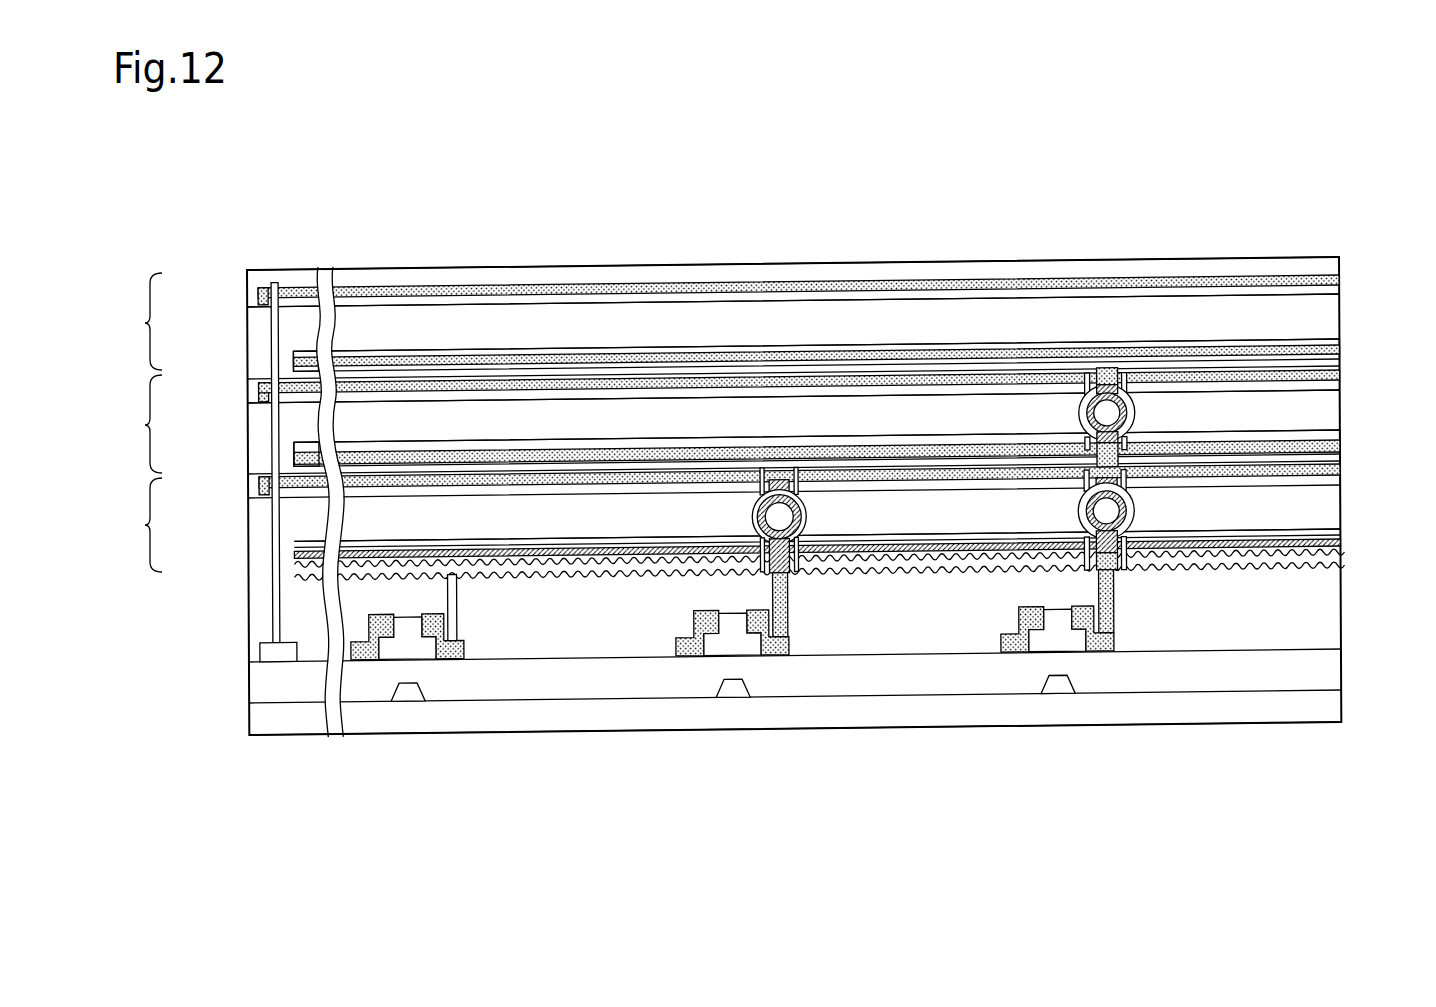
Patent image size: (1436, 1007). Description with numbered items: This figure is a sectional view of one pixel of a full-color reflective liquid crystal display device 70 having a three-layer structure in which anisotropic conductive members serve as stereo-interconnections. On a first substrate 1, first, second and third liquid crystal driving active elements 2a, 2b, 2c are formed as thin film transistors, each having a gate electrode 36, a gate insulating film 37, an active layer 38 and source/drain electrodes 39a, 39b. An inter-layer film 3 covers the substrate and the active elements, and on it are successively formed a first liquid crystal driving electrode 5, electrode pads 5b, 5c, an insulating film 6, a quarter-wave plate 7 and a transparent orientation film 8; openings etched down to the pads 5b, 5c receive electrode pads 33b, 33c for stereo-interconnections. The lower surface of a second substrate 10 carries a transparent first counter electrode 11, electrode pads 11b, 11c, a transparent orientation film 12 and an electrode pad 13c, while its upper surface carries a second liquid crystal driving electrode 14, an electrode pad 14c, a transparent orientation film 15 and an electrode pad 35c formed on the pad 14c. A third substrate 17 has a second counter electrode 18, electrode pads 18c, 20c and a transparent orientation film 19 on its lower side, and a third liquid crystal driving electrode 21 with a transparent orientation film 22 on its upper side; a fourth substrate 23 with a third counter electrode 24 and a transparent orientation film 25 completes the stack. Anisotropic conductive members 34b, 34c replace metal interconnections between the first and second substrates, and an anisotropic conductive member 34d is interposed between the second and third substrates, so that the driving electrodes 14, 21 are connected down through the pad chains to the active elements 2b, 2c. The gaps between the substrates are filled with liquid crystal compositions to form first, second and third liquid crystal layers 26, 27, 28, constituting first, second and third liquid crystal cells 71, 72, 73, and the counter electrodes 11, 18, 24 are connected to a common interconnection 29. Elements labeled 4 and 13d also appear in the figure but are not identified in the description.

The full-color reflective liquid crystal display device 70 is at (979, 213).
The first substrate 1 is at (1322, 708).
The first liquid crystal driving active element 2a is at (456, 678).
The second liquid crystal driving active element 2b is at (694, 669).
The third liquid crystal driving active element 2c is at (1070, 715).
The inter-layer film 3 is at (1340, 601).
The contact hole 4 is at (479, 607).
The first liquid crystal driving electrode 5 is at (585, 575).
The insulating film 6 is at (1282, 569).
The quarter-wave plate 7 is at (1340, 547).
The transparent orientation film 8 is at (1340, 530).
The second substrate 10 is at (247, 478).
The first counter electrode 11 is at (1340, 470).
The transparent orientation film 12 is at (258, 492).
The second liquid crystal driving electrode 14 is at (290, 455).
The transparent orientation film 15 is at (1340, 437).
The third substrate 17 is at (247, 379).
The second counter electrode 18 is at (1340, 377).
The transparent orientation film 19 is at (1340, 392).
The third liquid crystal driving electrode 21 is at (1340, 350).
The transparent orientation film 22 is at (288, 355).
The fourth substrate 23 is at (247, 283).
The third counter electrode 24 is at (1340, 276).
The transparent orientation film 25 is at (1340, 290).
The first liquid crystal layer 26 is at (390, 532).
The second liquid crystal layer 27 is at (388, 437).
The third liquid crystal layer 28 is at (388, 338).
The common interconnection 29 is at (271, 598).
The first liquid crystal cell 71 is at (140, 525).
The second liquid crystal cell 72 is at (137, 424).
The third liquid crystal cell 73 is at (137, 321).
The gate electrode 36 is at (1063, 698).
The gate insulating film 37 is at (1327, 670).
The active layer 38 is at (1047, 645).
The source/drain electrode 39a is at (1018, 652).
The source/drain electrode 39b is at (1103, 643).
The electrode pad 5b is at (790, 572).
The electrode pad 5c is at (1108, 566).
The electrode pad 11b is at (758, 503).
The electrode pad 11c is at (1135, 498).
The electrode pad for stereo-interconnection 13c is at (1078, 496).
The support wall 13d is at (800, 490).
The electrode pad 14c is at (1137, 418).
The electrode pad 18c is at (1112, 368).
The electrode pad 20c is at (1099, 377).
The electrode pad for stereo-interconnection 33b is at (765, 566).
The electrode pad for stereo-interconnection 33c is at (1085, 560).
The anisotropic conductive member 34b is at (808, 508).
The anisotropic conductive member 34c is at (1138, 519).
The anisotropic conductive member 34d is at (1130, 398).
The electrode pad 35c is at (1075, 415).